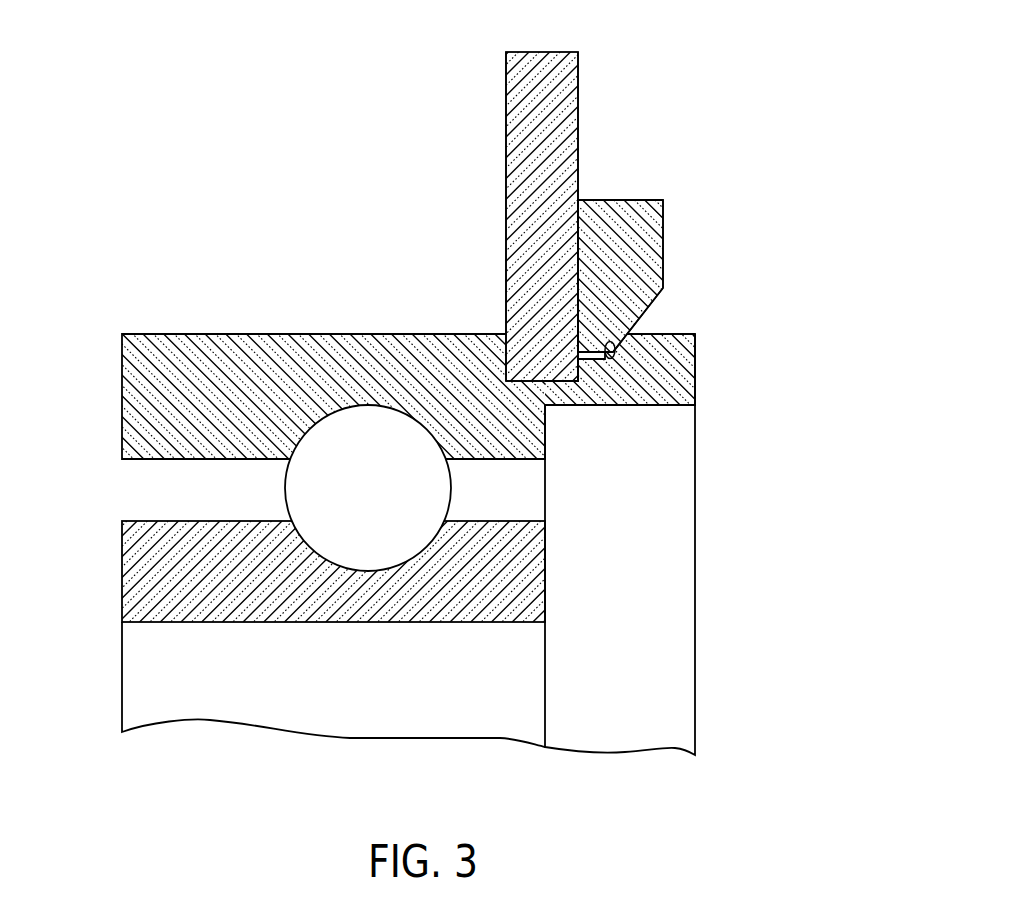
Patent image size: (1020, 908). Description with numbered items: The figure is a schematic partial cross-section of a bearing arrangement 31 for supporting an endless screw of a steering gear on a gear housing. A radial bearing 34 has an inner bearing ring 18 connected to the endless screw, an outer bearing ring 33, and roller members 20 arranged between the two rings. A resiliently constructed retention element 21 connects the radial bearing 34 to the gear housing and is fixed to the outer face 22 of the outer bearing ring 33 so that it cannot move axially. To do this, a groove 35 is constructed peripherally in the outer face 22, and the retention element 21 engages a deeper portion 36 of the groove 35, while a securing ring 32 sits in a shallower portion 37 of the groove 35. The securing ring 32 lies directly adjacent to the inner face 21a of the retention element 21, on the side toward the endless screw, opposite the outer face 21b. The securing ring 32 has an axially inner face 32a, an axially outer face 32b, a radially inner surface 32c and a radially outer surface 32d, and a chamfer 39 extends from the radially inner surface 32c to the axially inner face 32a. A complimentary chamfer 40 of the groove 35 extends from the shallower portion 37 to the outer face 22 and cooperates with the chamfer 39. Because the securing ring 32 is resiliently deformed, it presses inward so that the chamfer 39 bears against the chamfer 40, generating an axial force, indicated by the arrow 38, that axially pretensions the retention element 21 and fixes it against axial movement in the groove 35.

The inner bearing ring 18 is at (142, 561).
The roller members 20 is at (305, 497).
The retention element 21 is at (579, 73).
The inner face 21a is at (580, 98).
The outer face 21b is at (505, 157).
The outer face 22 is at (397, 334).
The bearing arrangement 31 is at (322, 280).
The securing ring 32 is at (637, 217).
The axially inner face 32a is at (663, 215).
The axially outer face 32b is at (578, 228).
The radially inner surface 32c is at (575, 365).
The radially outer surface 32d is at (622, 199).
The outer bearing ring 33 is at (152, 390).
The radial bearing 34 is at (243, 326).
The groove 35 is at (543, 376).
The deeper portion 36 is at (506, 381).
The shallower portion 37 is at (622, 337).
The arrow 38 is at (735, 259).
The chamfer 39 is at (657, 303).
The complimentary chamfer 40 is at (622, 337).